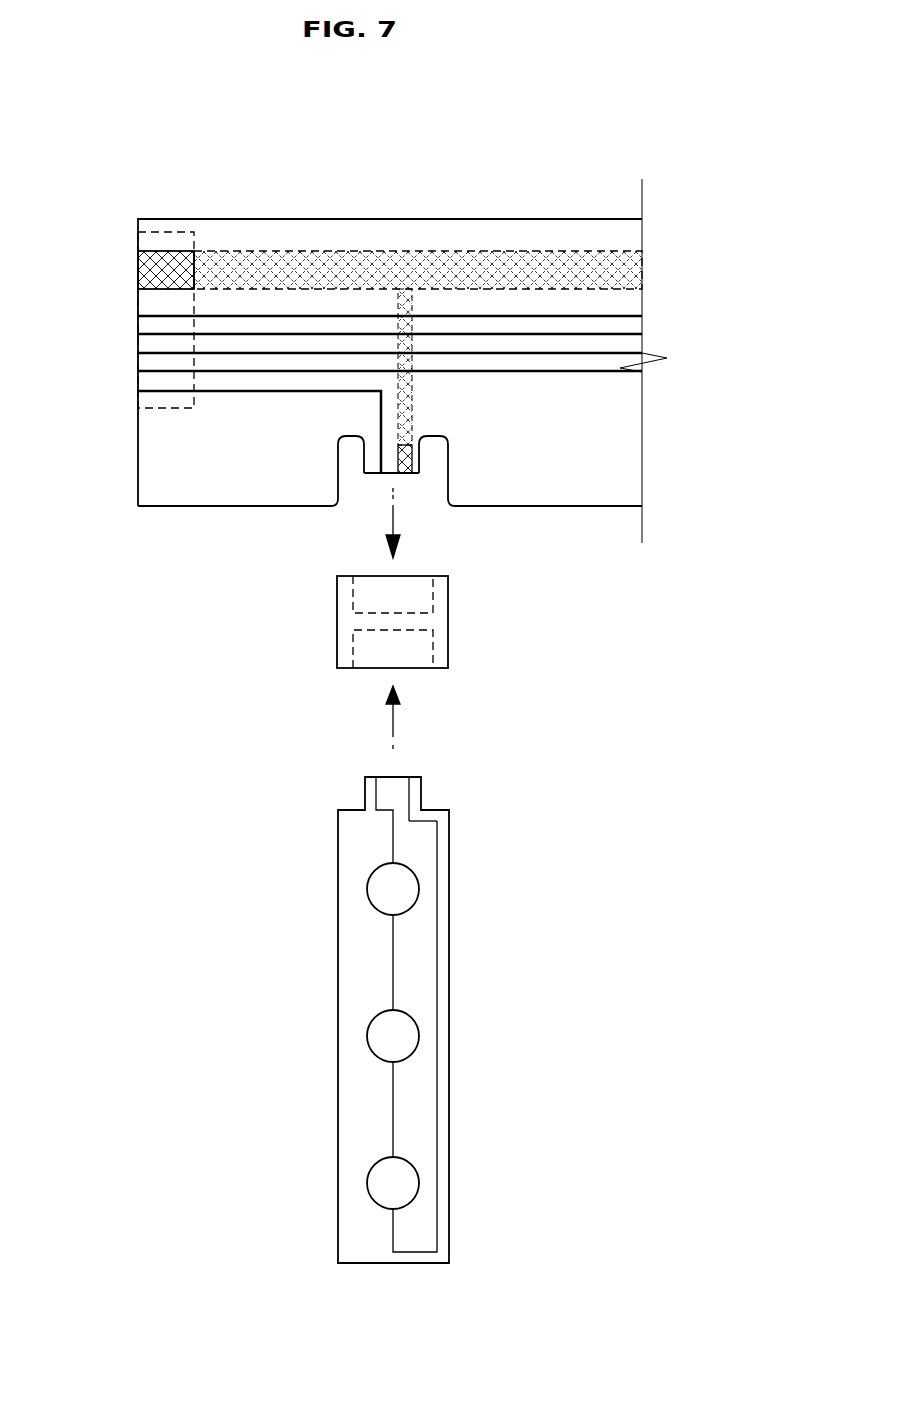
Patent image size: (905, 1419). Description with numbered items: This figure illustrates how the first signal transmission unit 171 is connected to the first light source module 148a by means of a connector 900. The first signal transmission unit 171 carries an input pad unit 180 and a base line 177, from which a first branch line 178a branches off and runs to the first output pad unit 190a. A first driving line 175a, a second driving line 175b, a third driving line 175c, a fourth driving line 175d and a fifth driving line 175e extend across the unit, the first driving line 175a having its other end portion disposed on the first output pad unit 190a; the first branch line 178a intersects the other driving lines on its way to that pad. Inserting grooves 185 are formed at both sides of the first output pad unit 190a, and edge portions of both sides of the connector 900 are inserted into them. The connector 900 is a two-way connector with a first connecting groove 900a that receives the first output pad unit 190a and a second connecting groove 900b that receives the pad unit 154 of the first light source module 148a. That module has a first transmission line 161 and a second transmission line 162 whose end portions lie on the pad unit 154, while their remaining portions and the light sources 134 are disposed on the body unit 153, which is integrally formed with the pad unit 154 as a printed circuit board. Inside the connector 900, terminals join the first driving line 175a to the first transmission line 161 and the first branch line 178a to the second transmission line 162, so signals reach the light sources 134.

The first signal transmission unit 171 is at (347, 219).
The first branch line 178a is at (412, 388).
The base line 177 is at (155, 265).
The first driving line 175a is at (153, 390).
The second driving line 175b is at (153, 370).
The third driving line 175c is at (153, 352).
The fourth driving line 175d is at (153, 333).
The fifth driving line 175e is at (153, 315).
The input pad unit 180 is at (172, 408).
The inserting groove 185 is at (350, 455).
The first output pad unit 190a is at (393, 475).
The connector 900 is at (449, 624).
The first connecting groove 900a is at (433, 593).
The second connecting groove 900b is at (433, 650).
The first light source module 148a is at (424, 1007).
The first transmission line 161 is at (376, 781).
The second transmission line 162 is at (409, 783).
The pad unit 154 is at (421, 800).
The body unit 153 is at (449, 1033).
The light source 134 is at (393, 889).